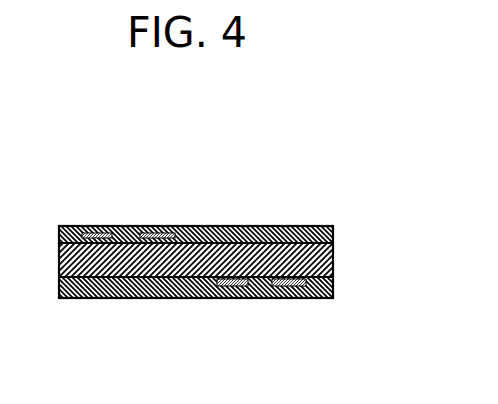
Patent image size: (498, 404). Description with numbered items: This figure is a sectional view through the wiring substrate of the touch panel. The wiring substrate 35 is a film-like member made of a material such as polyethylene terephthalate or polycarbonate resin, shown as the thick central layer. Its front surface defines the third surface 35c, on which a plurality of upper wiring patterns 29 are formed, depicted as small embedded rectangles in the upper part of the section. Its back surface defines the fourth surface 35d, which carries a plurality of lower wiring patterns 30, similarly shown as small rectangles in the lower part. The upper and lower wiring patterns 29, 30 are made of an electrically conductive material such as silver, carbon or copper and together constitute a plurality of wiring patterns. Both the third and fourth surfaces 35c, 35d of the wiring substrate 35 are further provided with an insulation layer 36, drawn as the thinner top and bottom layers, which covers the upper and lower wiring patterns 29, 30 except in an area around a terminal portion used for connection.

The upper wiring patterns 29 is at (137, 226).
The lower wiring patterns 30 is at (297, 298).
The wiring substrate 35 is at (333, 255).
The third surface 35c is at (245, 226).
The fourth surface 35d is at (145, 298).
The insulation layer 36 is at (327, 227).